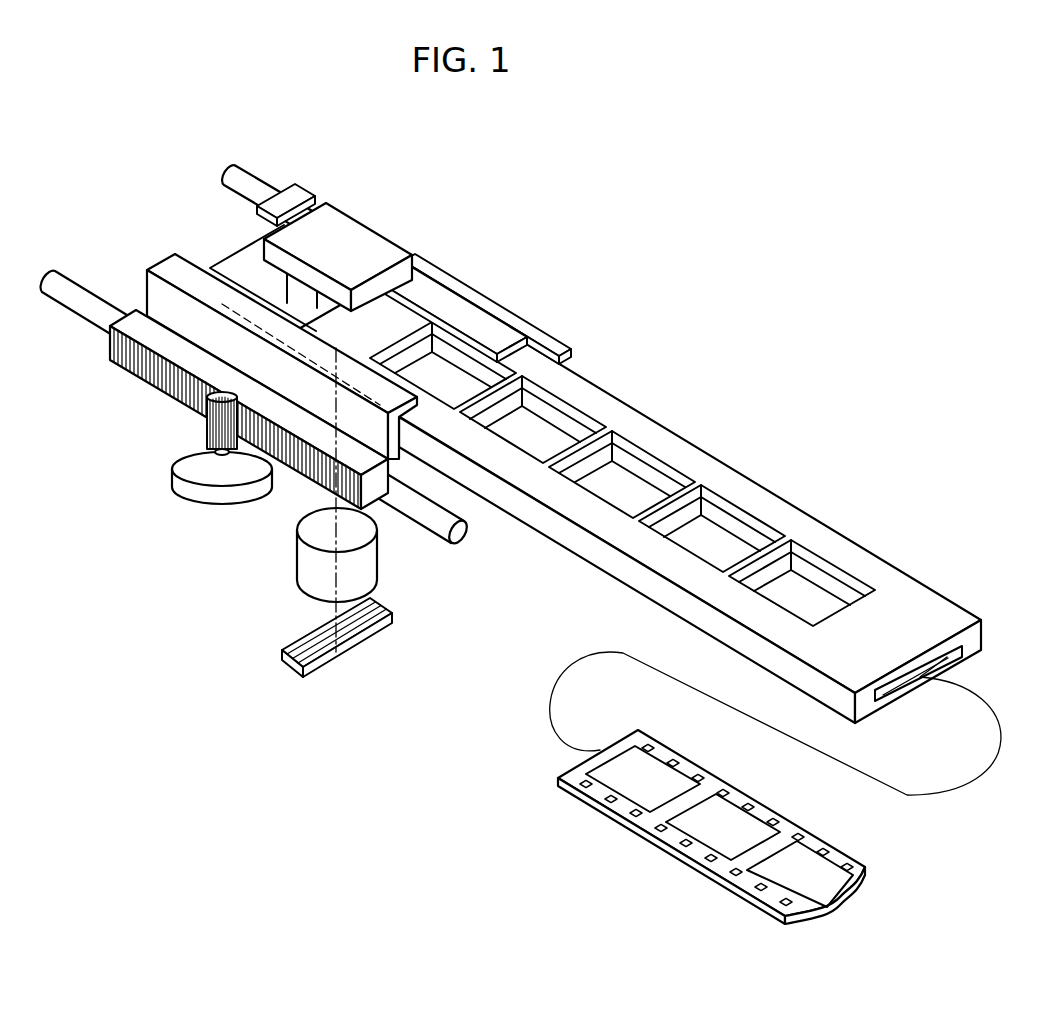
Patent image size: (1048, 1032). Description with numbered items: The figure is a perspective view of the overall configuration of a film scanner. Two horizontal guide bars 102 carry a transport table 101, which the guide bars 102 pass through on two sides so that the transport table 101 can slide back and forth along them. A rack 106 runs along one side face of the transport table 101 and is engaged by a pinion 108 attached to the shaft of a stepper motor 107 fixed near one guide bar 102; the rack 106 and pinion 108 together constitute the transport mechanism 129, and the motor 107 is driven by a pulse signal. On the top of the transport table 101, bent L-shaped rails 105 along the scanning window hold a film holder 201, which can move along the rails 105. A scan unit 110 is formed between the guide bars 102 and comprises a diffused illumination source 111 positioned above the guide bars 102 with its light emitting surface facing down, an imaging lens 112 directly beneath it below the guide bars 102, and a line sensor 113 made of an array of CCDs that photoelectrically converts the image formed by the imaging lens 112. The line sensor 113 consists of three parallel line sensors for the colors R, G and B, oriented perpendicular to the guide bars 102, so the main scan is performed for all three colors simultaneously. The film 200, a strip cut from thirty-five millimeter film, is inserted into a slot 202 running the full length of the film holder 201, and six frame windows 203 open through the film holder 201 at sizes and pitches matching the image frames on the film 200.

The transport mechanism 129 is at (79, 449).
The transport table 101 is at (300, 470).
The guide bars 102 is at (262, 183).
The L-shaped rails 105 is at (500, 330).
The rack 106 is at (137, 367).
The stepper motor 107 is at (177, 485).
The pinion 108 is at (213, 420).
The scan unit 110 is at (455, 277).
The diffused illumination source 111 is at (372, 246).
The imaging lens 112 is at (297, 562).
The line sensor 113 is at (365, 636).
The red line sensor R is at (378, 598).
The green line sensor G is at (386, 609).
The blue line sensor B is at (391, 614).
The film 200 is at (818, 848).
The film holder 201 is at (752, 494).
The slot 202 is at (962, 662).
The frame windows 203 is at (640, 477).